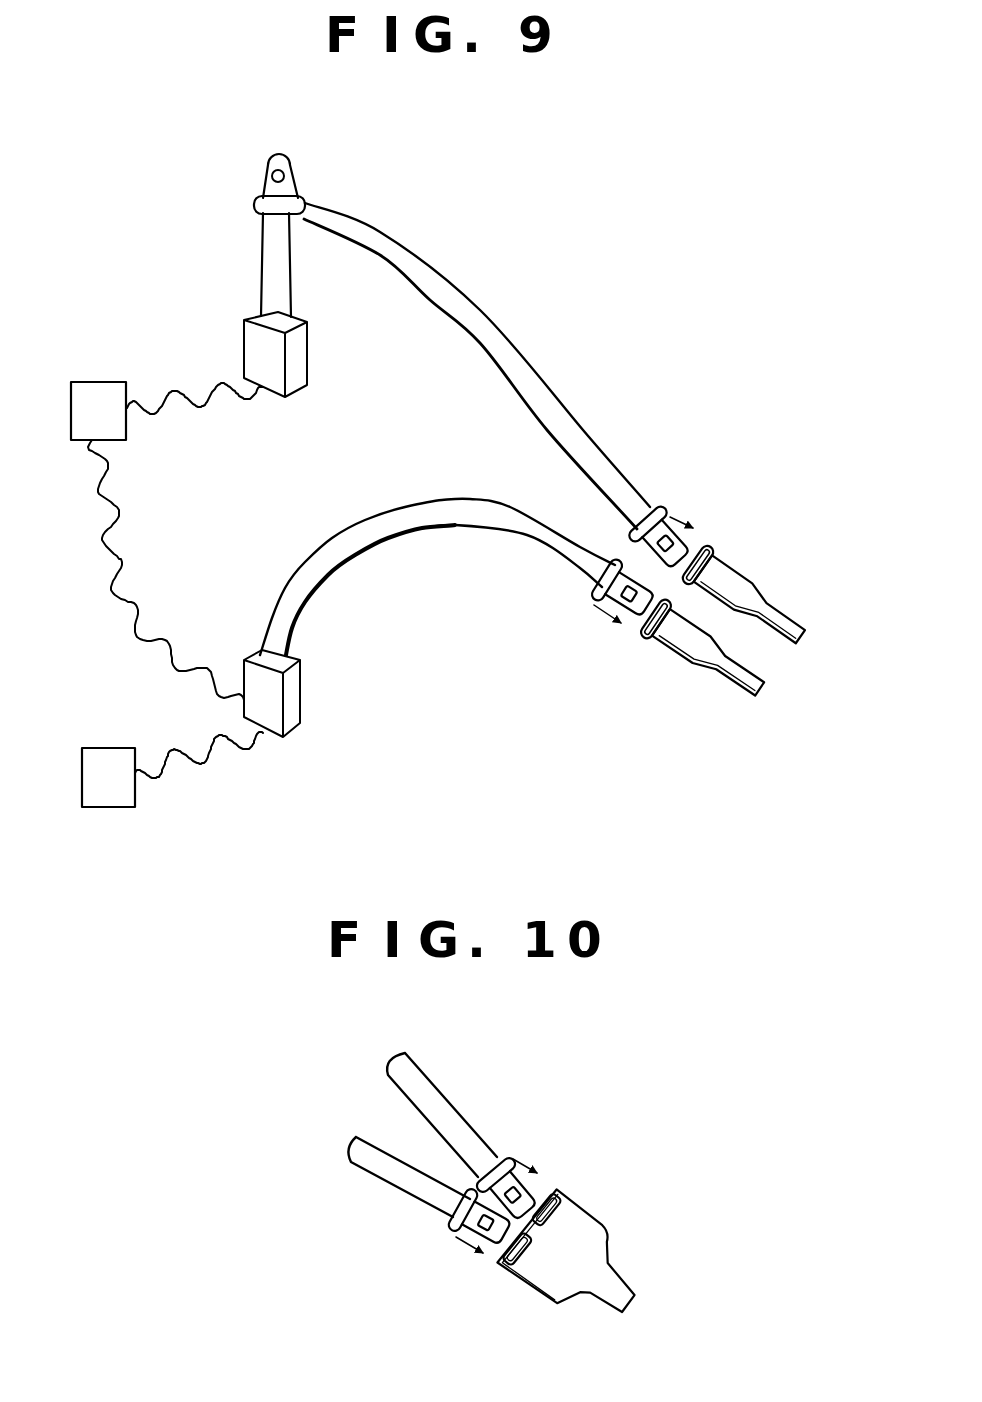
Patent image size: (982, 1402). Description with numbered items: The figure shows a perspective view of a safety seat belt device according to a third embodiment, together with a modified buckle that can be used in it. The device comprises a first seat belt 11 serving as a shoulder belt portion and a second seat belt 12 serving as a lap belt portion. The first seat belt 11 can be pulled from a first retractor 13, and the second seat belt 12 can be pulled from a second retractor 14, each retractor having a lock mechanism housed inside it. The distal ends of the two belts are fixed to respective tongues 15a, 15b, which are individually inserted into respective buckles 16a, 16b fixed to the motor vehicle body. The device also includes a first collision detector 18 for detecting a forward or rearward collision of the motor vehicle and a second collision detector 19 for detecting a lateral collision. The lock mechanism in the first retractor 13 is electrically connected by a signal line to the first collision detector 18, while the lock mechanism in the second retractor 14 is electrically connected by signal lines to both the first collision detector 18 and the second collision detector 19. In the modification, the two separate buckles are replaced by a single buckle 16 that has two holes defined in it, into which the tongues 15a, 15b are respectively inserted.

In FIG. 9, the first seat belt 11 is at (469, 327).
In FIG. 10, the first seat belt 11 is at (430, 1086).
In FIG. 9, the second seat belt 12 is at (424, 519).
In FIG. 10, the second seat belt 12 is at (387, 1167).
In FIG. 9, the first retractor 13 is at (296, 369).
In FIG. 9, the second retractor 14 is at (290, 712).
In FIG. 9, the tongue 15a is at (663, 510).
In FIG. 10, the tongue 15a is at (533, 1190).
In FIG. 9, the tongue 15b is at (634, 605).
In FIG. 10, the tongue 15b is at (467, 1230).
In FIG. 10, the single buckle 16 is at (580, 1227).
In FIG. 9, the buckle 16a is at (730, 573).
In FIG. 9, the buckle 16b is at (708, 660).
In FIG. 9, the first collision detector 18 is at (100, 393).
In FIG. 9, the second collision detector 19 is at (100, 760).